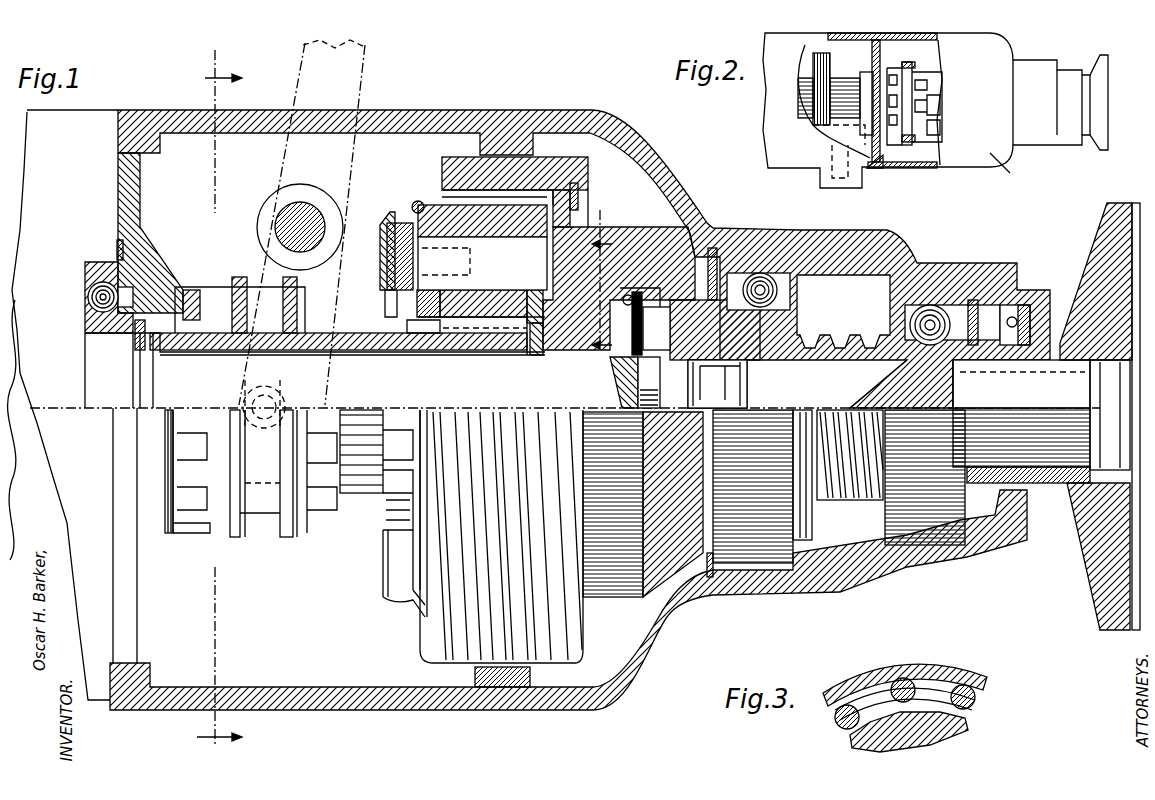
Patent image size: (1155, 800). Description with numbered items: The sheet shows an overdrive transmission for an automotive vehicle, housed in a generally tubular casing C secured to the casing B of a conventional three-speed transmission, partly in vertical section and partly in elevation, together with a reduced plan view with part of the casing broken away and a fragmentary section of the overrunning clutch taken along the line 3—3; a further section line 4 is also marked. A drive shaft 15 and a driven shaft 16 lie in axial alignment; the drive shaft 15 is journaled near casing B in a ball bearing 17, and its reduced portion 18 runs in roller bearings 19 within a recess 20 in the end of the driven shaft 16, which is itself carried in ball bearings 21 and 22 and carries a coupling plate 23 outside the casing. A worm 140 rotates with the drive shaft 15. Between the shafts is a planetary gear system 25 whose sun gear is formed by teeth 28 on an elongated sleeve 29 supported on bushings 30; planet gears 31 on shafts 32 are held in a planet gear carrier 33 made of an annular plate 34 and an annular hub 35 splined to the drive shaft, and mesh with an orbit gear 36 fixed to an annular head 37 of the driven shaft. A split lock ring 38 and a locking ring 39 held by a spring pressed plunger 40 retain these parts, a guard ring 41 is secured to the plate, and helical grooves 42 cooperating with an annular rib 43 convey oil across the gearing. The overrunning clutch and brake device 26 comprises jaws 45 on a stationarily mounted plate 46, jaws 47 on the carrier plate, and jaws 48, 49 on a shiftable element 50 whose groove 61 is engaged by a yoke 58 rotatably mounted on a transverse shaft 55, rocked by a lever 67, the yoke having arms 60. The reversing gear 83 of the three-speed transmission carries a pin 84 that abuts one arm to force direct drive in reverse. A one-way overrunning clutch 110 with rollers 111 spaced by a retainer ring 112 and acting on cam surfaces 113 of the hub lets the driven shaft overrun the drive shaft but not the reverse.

In FIG. 1, the section line 3— 3 is at (588, 385).
In FIG. 1, the section line 4— 4 is at (219, 411).
In FIG. 1, the drive shaft 15 is at (466, 384).
In FIG. 1, the driven shaft 16 is at (933, 406).
In FIG. 1, the ball bearing 17 is at (88, 290).
In FIG. 1, the reduced portion 18 is at (723, 404).
In FIG. 1, the roller bearings 19 is at (700, 366).
In FIG. 1, the recess 20 is at (752, 366).
In FIG. 1, the ball bearing 21 is at (760, 250).
In FIG. 1, the ball bearing 22 is at (930, 305).
In FIG. 1, the coupling plate 23 is at (1097, 592).
In FIG. 1, the planetary gear system 25 is at (419, 181).
In FIG. 1, the overrunning clutch and brake device 26 is at (274, 562).
In FIG. 1, the teeth 28 is at (428, 333).
In FIG. 1, the elongated sleeve 29 is at (343, 342).
In FIG. 1, the bushings 30 is at (492, 342).
In FIG. 1, the planet gears 31 is at (388, 222).
In FIG. 1, the shaft 32 is at (482, 264).
In FIG. 1, the planet gear carrier 33 is at (543, 357).
In FIG. 1, the annular plate 34 is at (412, 206).
In FIG. 1, the annular hub 35 is at (631, 293).
In FIG. 3, the annular hub 35 is at (972, 725).
In FIG. 1, the orbit gear 36 is at (581, 195).
In FIG. 1, the annular head 37 is at (627, 243).
In FIG. 3, the annular head 37 is at (900, 660).
In FIG. 1, the split lock ring 38 is at (582, 195).
In FIG. 1, the locking ring 39 is at (700, 272).
In FIG. 1, the spring pressed plunger 40 is at (617, 377).
In FIG. 1, the guard ring 41 is at (375, 400).
In FIG. 1, the helical grooves 42 is at (520, 643).
In FIG. 1, the annular rib 43 is at (530, 678).
In FIG. 1, the jaws 45 is at (193, 497).
In FIG. 1, the stationarily mounted plate 46 is at (147, 232).
In FIG. 2, the stationarily mounted plate 46 is at (883, 149).
In FIG. 1, the jaws 47 is at (393, 513).
In FIG. 1, the jaws 48 is at (198, 513).
In FIG. 1, the jaws 49 is at (327, 517).
In FIG. 1, the shiftable element 50 is at (245, 285).
In FIG. 1, the shaft 55 is at (300, 203).
In FIG. 1, the yoke 58 is at (325, 250).
In FIG. 1, the groove 61 is at (277, 527).
In FIG. 1, the lever 67 is at (368, 84).
In FIG. 2, the reversing gear 83 is at (813, 61).
In FIG. 2, the pin 84 is at (852, 64).
In FIG. 1, the one-way overrunning clutch 110 is at (688, 265).
In FIG. 3, the rollers 111 is at (845, 730).
In FIG. 3, the retainer ring 112 is at (945, 680).
In FIG. 3, the cam surfaces 113 is at (913, 702).
In FIG. 1, the worm 140 is at (848, 330).
In FIG. 1, the casing B is at (52, 333).
In FIG. 2, the casing B is at (791, 148).
In FIG. 1, the casing C is at (376, 709).
In FIG. 2, the casing C is at (1007, 170).
In FIG. 2, the arms 60 is at (935, 110).